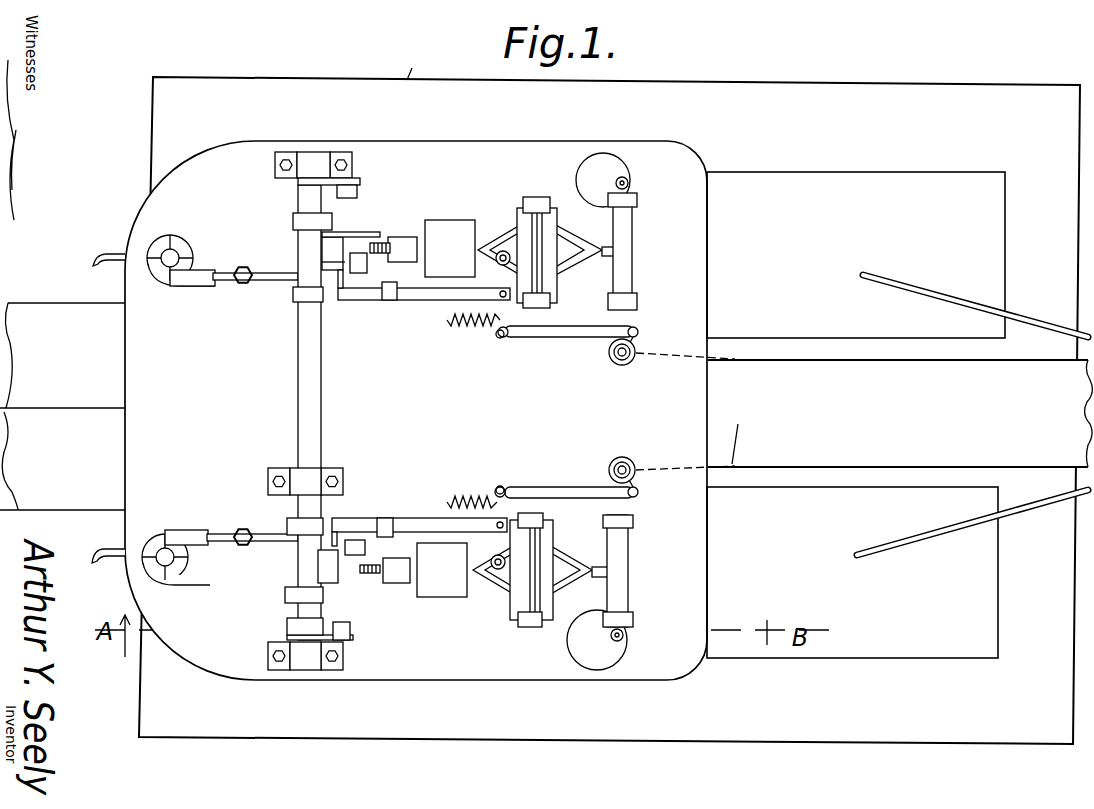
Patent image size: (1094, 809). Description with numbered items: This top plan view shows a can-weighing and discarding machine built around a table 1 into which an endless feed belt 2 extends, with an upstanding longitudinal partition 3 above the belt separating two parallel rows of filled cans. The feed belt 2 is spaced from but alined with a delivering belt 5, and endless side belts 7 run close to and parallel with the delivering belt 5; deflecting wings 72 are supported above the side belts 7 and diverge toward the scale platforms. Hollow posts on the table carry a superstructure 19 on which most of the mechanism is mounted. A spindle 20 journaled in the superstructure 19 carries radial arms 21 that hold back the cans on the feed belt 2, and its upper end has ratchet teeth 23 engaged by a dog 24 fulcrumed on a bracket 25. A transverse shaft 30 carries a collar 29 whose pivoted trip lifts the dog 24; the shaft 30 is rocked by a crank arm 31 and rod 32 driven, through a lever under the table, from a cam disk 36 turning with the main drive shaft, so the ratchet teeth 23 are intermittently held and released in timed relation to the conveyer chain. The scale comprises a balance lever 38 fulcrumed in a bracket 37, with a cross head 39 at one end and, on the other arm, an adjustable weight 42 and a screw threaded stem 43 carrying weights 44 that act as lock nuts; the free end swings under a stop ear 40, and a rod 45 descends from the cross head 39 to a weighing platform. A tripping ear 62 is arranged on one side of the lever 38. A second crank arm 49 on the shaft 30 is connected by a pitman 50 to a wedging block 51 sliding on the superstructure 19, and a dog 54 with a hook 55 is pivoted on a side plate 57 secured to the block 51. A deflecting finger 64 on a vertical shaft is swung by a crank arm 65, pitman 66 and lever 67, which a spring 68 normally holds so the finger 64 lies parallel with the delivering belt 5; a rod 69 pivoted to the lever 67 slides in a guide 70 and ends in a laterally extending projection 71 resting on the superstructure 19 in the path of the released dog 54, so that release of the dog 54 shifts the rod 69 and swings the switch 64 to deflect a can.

The table 1 is at (414, 61).
The endless feed belt 2 is at (62, 312).
The upstanding longitudinal partition 3 is at (60, 412).
The delivering belt 5 is at (1030, 462).
The endless side belts 7 is at (810, 185).
The superstructure 19 is at (425, 158).
The spindle 20 is at (178, 257).
The radial arms 21 is at (114, 252).
The ratchet teeth 23 is at (170, 240).
The dog 24 is at (272, 282).
The bracket 25 is at (240, 283).
The collar 29 is at (300, 300).
The transverse shaft 30 is at (321, 430).
The crank arm 31 is at (350, 178).
The rod 32 is at (357, 192).
The cam disk 36 is at (572, 240).
The bracket 37 is at (537, 198).
The balance lever 38 is at (368, 256).
The cross head 39 is at (634, 232).
The stop ear 40 is at (322, 250).
The adjustable weight 42 is at (462, 240).
The screw threaded stem 43 is at (447, 262).
The weights 44 is at (428, 250).
The rod 45 is at (628, 186).
The crank arm 49 is at (300, 216).
The pitman 50 is at (378, 243).
The wedging block 51 is at (398, 583).
The dog 54 is at (412, 300).
The hook 55 is at (386, 300).
The side plate 57 is at (430, 650).
The tripping ear 62 is at (322, 262).
The deflecting finger 64 is at (735, 362).
The crank arm 65 is at (640, 351).
The pitman 66 is at (545, 337).
The lever 67 is at (498, 338).
The spring 68 is at (485, 320).
The rod 69 is at (455, 320).
The guide 70 is at (395, 301).
The laterally extending projection 71 is at (338, 292).
The deflecting wings 72 is at (912, 292).